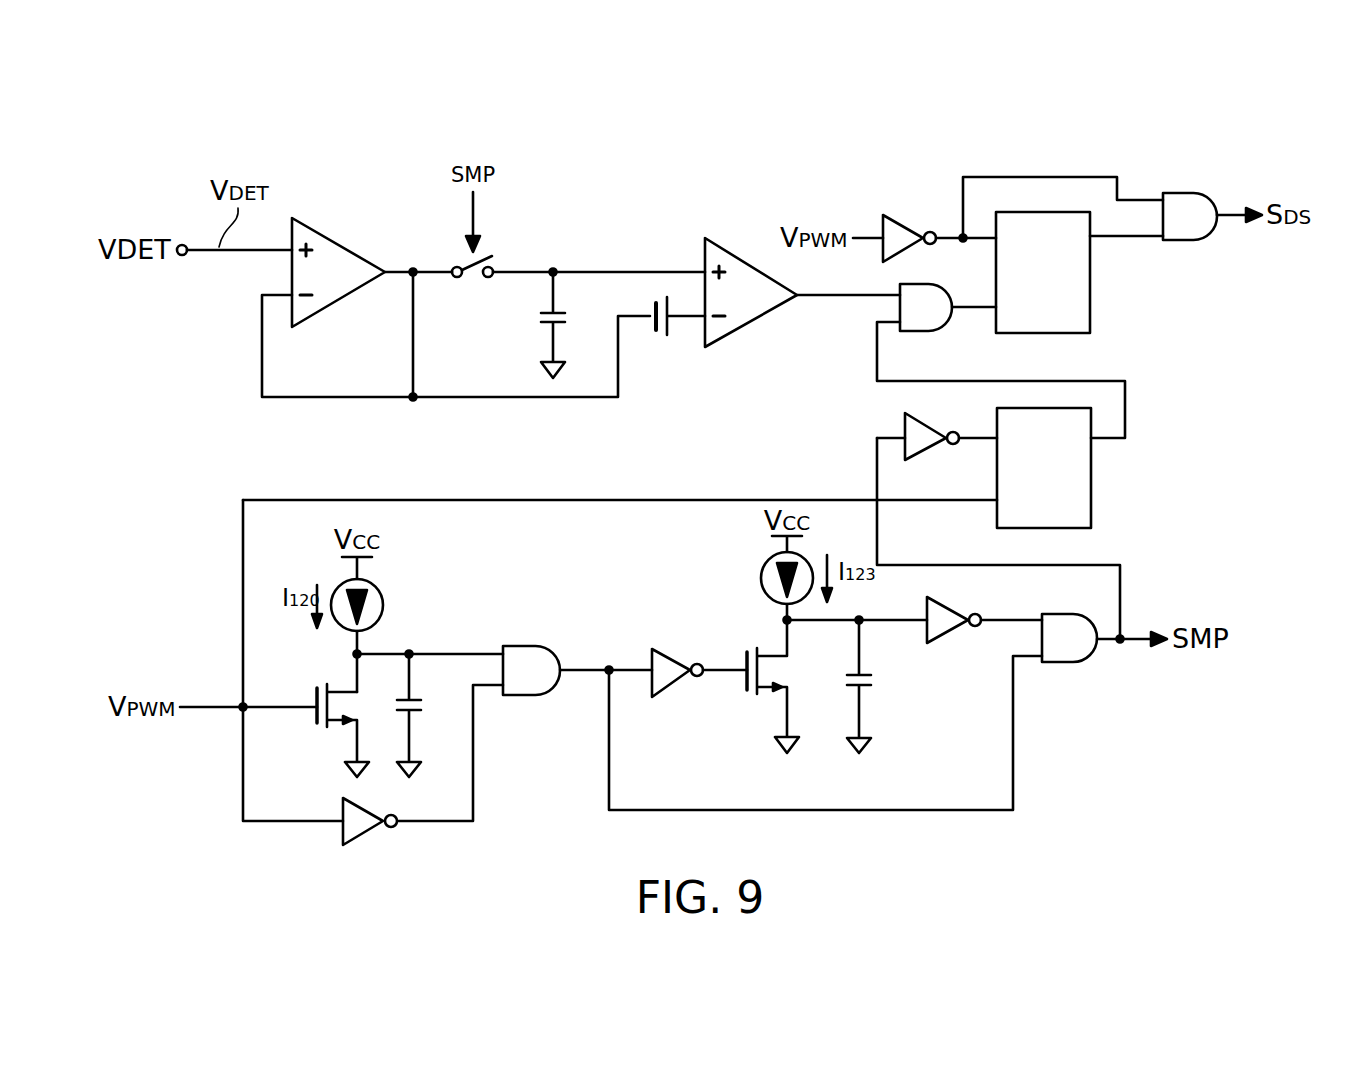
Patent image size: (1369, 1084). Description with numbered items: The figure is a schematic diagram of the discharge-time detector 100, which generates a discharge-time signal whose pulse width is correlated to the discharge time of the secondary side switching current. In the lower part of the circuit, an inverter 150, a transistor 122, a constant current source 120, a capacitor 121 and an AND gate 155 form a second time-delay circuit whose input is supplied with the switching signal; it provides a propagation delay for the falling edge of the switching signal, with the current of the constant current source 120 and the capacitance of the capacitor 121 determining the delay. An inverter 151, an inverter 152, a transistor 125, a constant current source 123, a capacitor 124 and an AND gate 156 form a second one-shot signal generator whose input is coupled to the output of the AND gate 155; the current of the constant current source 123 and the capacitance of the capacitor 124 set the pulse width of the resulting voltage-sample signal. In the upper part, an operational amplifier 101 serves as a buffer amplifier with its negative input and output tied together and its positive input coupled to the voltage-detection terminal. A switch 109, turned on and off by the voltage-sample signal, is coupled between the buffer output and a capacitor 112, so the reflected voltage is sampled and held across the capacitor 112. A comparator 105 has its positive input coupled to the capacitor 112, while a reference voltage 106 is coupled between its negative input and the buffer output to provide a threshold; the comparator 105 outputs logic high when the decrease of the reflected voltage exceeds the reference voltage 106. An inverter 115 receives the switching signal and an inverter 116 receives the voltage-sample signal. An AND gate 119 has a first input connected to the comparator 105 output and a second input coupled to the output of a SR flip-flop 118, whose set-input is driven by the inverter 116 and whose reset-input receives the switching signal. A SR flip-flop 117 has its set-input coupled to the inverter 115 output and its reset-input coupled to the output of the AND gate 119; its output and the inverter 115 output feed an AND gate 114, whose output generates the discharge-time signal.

The discharge-time detector 100 is at (1146, 127).
The operational amplifier 101 is at (312, 222).
The comparator 105 is at (740, 338).
The reference voltage 106 is at (664, 340).
The switch 109 is at (488, 245).
The capacitor 112 is at (536, 324).
The AND gate 114 is at (1183, 248).
The inverter 115 is at (902, 213).
The inverter 116 is at (898, 428).
The SR flip-flop 117 is at (1093, 325).
The SR flip-flop 118 is at (1093, 505).
The AND gate 119 is at (942, 333).
The constant current source 120 is at (385, 605).
The capacitor 121 is at (428, 706).
The transistor 122 is at (320, 732).
The constant current source 123 is at (759, 579).
The capacitor 124 is at (878, 681).
The transistor 125 is at (745, 700).
The inverter 150 is at (365, 840).
The inverter 151 is at (668, 648).
The inverter 152 is at (955, 594).
The AND gate 155 is at (525, 640).
The AND gate 156 is at (1065, 665).